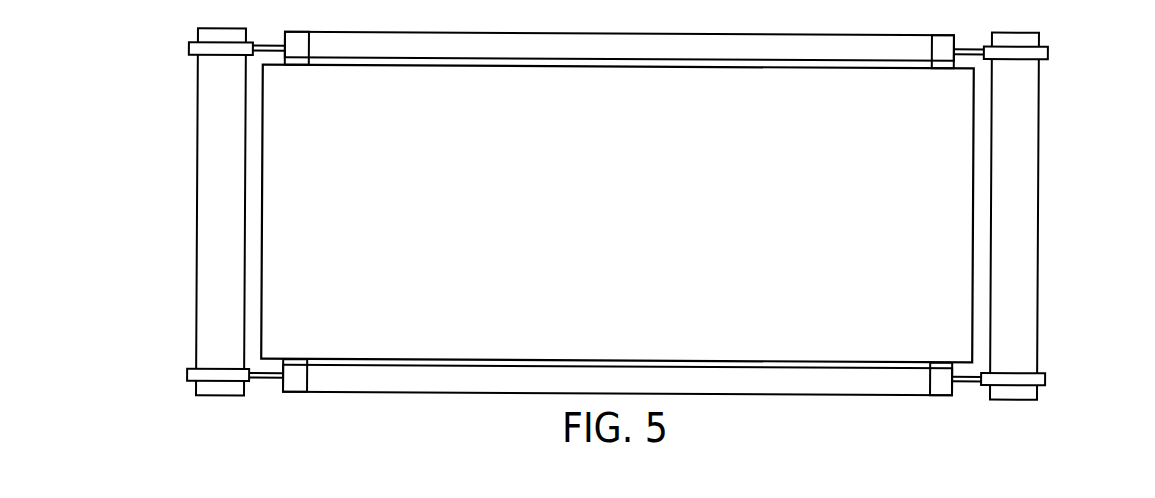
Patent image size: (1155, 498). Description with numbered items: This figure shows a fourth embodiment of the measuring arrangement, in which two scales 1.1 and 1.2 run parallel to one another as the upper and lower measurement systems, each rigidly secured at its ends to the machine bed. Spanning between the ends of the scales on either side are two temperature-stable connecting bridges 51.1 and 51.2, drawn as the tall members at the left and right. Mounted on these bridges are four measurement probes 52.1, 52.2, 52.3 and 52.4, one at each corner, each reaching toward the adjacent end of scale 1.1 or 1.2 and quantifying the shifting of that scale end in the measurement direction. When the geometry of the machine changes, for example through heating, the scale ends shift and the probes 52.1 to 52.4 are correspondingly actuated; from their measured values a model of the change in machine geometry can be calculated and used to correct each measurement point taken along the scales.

The scale 1.1 is at (730, 53).
The scale 1.2 is at (830, 380).
The connecting bridge 51.1 is at (208, 184).
The connecting bridge 51.2 is at (1033, 190).
The measurement probe 52.1 is at (202, 48).
The measurement probe 52.2 is at (197, 374).
The measurement probe 52.3 is at (1035, 53).
The measurement probe 52.4 is at (1035, 378).